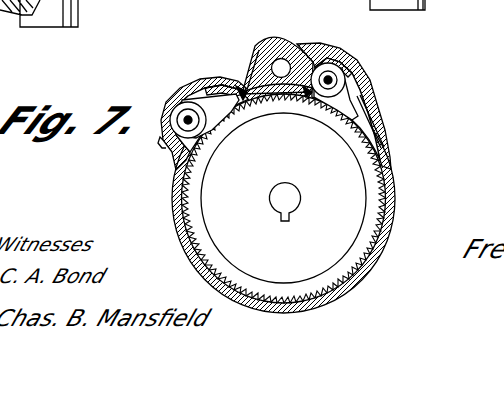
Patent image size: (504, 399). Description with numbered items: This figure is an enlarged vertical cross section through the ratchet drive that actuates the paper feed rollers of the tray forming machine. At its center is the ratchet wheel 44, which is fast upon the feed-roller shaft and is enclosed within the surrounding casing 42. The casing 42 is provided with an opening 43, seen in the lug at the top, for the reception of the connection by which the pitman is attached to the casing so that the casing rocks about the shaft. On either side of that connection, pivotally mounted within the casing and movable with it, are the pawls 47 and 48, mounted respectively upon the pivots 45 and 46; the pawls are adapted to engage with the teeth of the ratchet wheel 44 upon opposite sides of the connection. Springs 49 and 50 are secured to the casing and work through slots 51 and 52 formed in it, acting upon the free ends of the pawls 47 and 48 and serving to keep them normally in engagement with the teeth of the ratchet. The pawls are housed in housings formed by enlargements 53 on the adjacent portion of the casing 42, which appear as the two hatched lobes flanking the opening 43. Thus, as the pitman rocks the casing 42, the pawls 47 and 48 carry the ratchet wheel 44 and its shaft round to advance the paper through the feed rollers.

The casing 42 is at (393, 211).
The opening 43 is at (281, 58).
The ratchet wheel 44 is at (366, 173).
The pivot 45 is at (329, 80).
The pivot 46 is at (162, 142).
The pawl 47 is at (343, 97).
The pawl 48 is at (208, 108).
The spring 49 is at (368, 112).
The spring 50 is at (236, 88).
The slot 51 is at (376, 144).
The slot 52 is at (168, 97).
The enlargement 53 is at (193, 95).